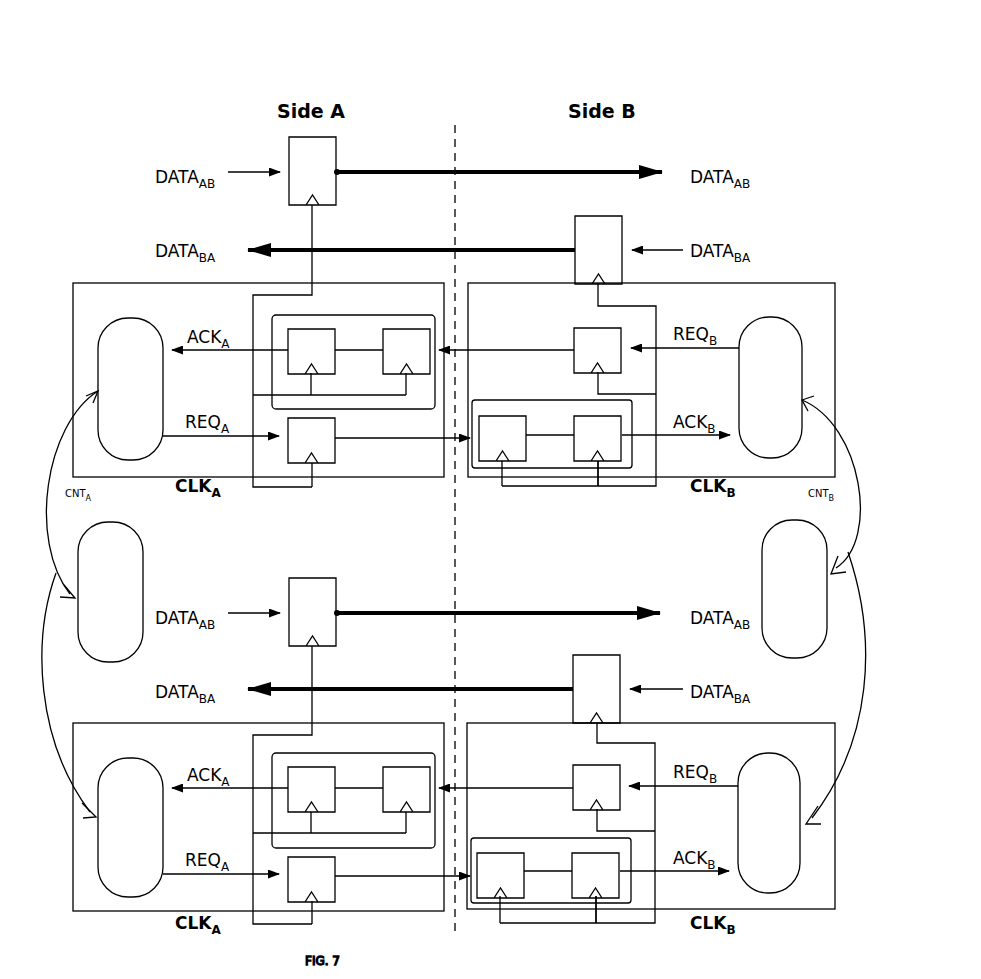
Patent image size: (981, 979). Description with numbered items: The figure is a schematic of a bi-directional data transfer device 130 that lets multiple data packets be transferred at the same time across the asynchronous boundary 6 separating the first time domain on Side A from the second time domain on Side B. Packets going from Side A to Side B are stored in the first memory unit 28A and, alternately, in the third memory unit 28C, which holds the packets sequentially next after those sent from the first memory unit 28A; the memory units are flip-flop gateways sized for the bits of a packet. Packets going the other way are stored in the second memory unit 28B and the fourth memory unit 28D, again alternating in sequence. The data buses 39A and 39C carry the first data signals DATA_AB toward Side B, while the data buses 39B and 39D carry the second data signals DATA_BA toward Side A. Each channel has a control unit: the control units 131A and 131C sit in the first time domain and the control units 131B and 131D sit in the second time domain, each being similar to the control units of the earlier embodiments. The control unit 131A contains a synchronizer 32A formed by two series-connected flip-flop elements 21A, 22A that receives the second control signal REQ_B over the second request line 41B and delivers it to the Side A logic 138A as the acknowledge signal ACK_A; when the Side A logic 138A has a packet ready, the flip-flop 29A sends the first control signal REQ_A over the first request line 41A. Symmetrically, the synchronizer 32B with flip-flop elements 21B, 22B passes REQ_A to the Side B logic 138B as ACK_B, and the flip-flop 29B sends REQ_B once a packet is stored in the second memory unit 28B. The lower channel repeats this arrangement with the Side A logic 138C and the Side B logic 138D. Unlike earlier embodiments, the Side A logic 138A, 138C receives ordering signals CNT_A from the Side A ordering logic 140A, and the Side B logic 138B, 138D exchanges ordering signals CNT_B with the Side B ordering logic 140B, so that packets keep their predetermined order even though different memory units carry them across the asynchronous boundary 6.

The bi-directional data transfer device 130 is at (131, 136).
The asynchronous boundary 6 is at (470, 151).
The first memory unit 28A is at (284, 166).
The second memory unit 28B is at (627, 236).
The third memory unit 28C is at (284, 607).
The fourth memory unit 28D is at (627, 675).
The data bus 39A is at (423, 174).
The data bus 39B is at (522, 252).
The data bus 39C is at (423, 614).
The data bus 39D is at (522, 690).
The control unit 131A is at (146, 281).
The control unit 131B is at (767, 283).
The third control unit 131C is at (146, 721).
The fourth control unit 131D is at (767, 721).
The Side A logic 138A is at (138, 313).
The Side B logic 138B is at (767, 314).
The Side A logic 138C is at (138, 753).
The Side B logic 138D is at (767, 751).
The synchronizer 32A is at (420, 296).
The synchronizer 32B is at (557, 399).
The flip-flop element 21A is at (344, 374).
The flip-flop element 22A is at (374, 373).
The flip-flop element 21B is at (529, 449).
The flip-flop element 22B is at (568, 464).
The flip-flop element 29A is at (340, 428).
The flip-flop element 29B is at (607, 322).
The first request line 41A is at (418, 448).
The second request line 41B is at (522, 338).
The Side A ordering logic 140A is at (92, 604).
The Side B ordering logic 140B is at (814, 610).